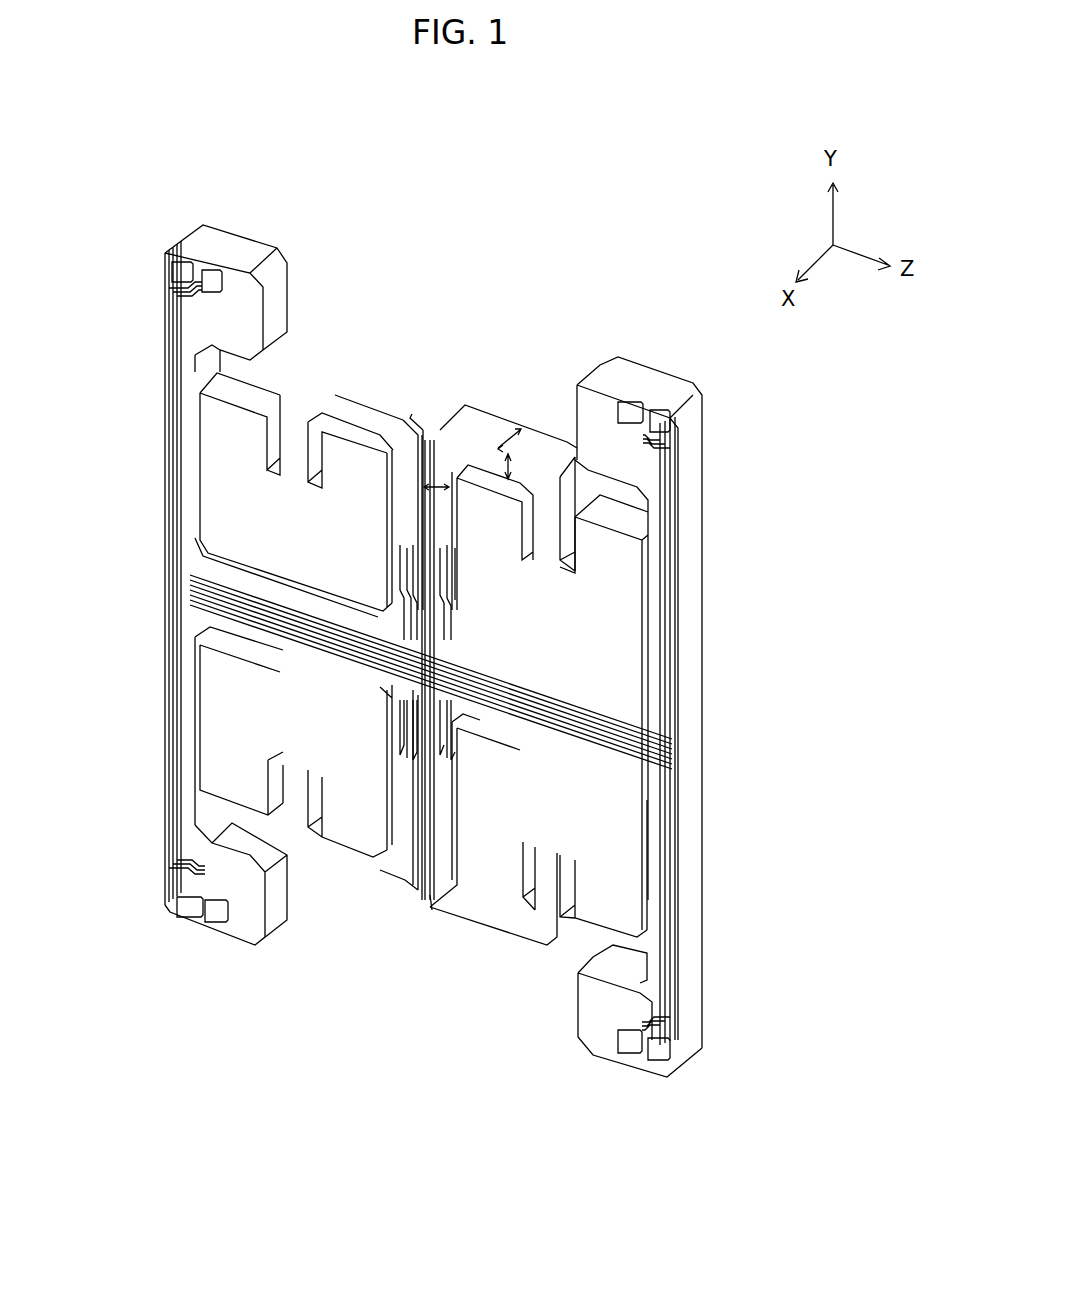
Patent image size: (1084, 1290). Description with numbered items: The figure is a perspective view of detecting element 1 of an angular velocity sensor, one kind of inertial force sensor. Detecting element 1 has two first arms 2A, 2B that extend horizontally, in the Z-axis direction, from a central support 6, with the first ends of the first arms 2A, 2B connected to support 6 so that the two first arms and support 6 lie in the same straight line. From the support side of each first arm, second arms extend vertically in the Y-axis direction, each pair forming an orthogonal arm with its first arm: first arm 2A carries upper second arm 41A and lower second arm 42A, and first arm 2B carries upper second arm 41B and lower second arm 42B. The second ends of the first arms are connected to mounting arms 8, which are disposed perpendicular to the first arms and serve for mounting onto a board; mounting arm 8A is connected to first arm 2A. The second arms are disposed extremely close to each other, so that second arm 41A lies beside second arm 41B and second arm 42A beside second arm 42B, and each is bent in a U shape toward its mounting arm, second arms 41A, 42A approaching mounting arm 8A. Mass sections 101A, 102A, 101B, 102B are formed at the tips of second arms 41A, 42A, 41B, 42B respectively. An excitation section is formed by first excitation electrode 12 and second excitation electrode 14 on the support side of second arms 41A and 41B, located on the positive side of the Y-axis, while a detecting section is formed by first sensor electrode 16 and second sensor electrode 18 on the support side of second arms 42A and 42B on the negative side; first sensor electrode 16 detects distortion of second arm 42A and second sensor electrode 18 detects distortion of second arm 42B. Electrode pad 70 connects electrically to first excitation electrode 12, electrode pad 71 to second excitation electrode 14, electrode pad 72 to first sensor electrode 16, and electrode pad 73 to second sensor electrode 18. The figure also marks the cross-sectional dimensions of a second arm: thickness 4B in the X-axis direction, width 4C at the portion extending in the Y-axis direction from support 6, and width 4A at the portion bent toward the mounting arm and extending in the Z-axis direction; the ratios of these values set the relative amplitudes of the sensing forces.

The detecting element 1 is at (493, 250).
The first arm 2A is at (673, 748).
The first arm 2B is at (345, 645).
The width 4A is at (510, 465).
The thickness 4B is at (505, 440).
The width 4C is at (432, 480).
The upper second arm 41A is at (437, 445).
The upper second arm 41B is at (400, 430).
The lower second arm 42A is at (433, 890).
The lower second arm 42B is at (405, 880).
The support 6 is at (430, 660).
The mounting arm 8 is at (185, 585).
The mounting arm 8A is at (675, 742).
The mass section 101A is at (615, 537).
The mass section 101B is at (210, 405).
The mass section 102A is at (620, 885).
The mass section 102B is at (222, 770).
The first excitation electrode 12 is at (440, 548).
The second excitation electrode 14 is at (398, 560).
The first sensor electrode 16 is at (445, 760).
The second sensor electrode 18 is at (412, 777).
The electrode pad 70 is at (660, 420).
The electrode pad 71 is at (210, 285).
The electrode pad 72 is at (663, 1065).
The electrode pad 73 is at (210, 915).